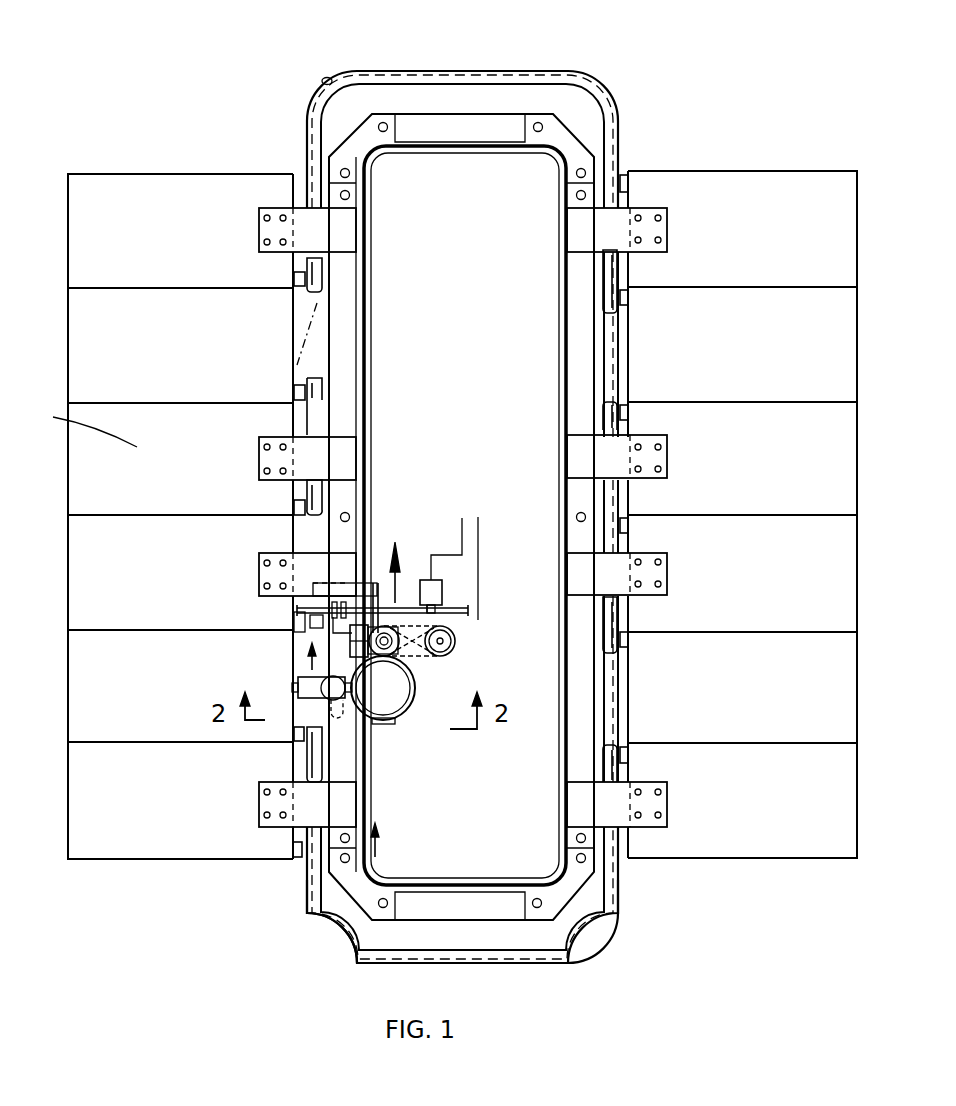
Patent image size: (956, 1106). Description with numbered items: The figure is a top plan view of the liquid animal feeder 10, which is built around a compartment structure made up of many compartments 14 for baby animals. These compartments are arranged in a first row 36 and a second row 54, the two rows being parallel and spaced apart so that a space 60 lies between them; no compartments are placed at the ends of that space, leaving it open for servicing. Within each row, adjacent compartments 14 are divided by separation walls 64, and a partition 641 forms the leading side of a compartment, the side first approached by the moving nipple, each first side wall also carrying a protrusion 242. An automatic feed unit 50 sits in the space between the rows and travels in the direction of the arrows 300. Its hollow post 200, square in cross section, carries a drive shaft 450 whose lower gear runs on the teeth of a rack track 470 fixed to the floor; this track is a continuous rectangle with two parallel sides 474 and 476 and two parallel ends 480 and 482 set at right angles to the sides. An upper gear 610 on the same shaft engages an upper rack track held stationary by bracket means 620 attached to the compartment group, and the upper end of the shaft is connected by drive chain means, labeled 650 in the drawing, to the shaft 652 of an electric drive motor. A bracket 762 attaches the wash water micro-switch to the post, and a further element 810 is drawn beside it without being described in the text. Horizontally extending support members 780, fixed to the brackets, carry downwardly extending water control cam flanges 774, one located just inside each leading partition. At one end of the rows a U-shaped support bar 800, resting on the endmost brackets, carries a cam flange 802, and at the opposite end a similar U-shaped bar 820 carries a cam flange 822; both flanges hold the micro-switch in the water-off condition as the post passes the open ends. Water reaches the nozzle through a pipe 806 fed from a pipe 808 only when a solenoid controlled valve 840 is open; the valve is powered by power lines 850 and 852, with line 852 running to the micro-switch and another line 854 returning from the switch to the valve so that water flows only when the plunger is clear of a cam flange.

The liquid animal feeder 10 is at (603, 153).
The compartment 14 is at (108, 860).
The row of compartments 36 is at (82, 285).
The automatic feed unit 50 is at (380, 727).
The row of compartments 54 is at (843, 273).
The space between rows 60 is at (660, 953).
The separation wall 64 is at (98, 289).
The hollow post 200 is at (437, 608).
The protrusion 242 is at (290, 742).
The arrows 300 is at (390, 588).
The drive shaft 450 is at (384, 657).
The rack track 470 is at (438, 883).
The side of rack track 474 is at (362, 348).
The side of rack track 476 is at (563, 332).
The end of rack track 480 is at (472, 894).
The end of rack track 482 is at (435, 146).
The upper gear 610 is at (407, 665).
The bracket means 620 is at (347, 230).
The partition 641 is at (163, 862).
The belt 650 is at (445, 663).
The motor shaft 652 is at (450, 638).
The bracket 762 is at (416, 596).
The water control cam flange 774 is at (329, 278).
The support member 780 is at (315, 260).
The support bar 800 is at (433, 78).
The water control cam flange 802 is at (322, 80).
The pipe 806 is at (310, 600).
The pipe 808 is at (463, 606).
The coupling block 810 is at (300, 632).
The U-shaped bar 820 is at (315, 929).
The water control cam flange 822 is at (308, 910).
The solenoid controlled valve 840 is at (425, 580).
The power line 850 is at (460, 517).
The power line 852 is at (480, 542).
The line 854 is at (330, 590).